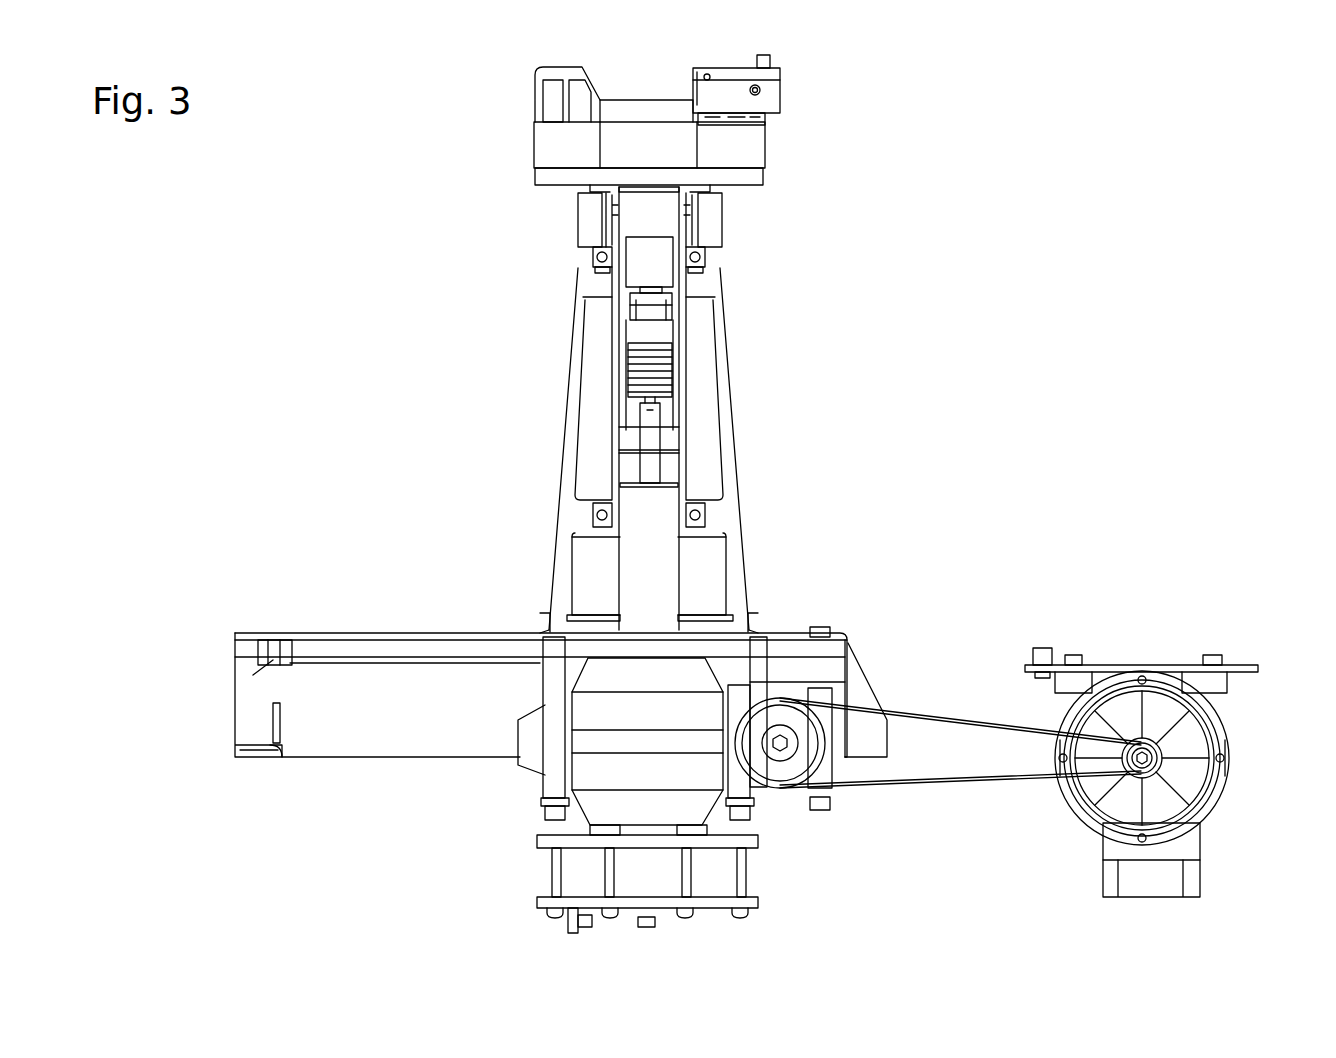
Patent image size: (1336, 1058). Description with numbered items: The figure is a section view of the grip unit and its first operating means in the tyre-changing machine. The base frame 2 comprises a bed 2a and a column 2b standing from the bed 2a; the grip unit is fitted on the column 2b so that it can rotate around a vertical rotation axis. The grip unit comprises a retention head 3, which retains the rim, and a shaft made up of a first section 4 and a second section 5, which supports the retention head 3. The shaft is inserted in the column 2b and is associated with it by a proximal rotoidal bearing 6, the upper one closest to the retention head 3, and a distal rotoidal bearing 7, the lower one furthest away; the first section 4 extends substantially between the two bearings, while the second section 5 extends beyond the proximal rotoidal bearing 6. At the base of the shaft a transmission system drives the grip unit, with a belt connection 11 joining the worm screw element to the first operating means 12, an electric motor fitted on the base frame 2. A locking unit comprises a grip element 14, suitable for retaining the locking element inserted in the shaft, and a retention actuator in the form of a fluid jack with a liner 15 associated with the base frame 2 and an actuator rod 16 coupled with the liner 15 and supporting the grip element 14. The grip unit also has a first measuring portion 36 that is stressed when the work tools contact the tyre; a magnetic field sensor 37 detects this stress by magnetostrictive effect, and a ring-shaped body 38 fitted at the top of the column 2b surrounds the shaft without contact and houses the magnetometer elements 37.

The base frame 2 is at (300, 622).
The bed 2a is at (262, 712).
The column 2b is at (723, 453).
The retention head 3 is at (556, 137).
The first section of the shaft 4 is at (683, 340).
The second section of the shaft 5 is at (692, 200).
The first measuring portion 36 is at (703, 220).
The proximal rotoidal bearing 6 is at (593, 253).
The distal rotoidal bearing 7 is at (587, 520).
The belt connection 11 is at (928, 712).
The first operating means 12 is at (1185, 738).
The grip element 14 is at (648, 258).
The liner 15 is at (578, 872).
The actuator rod 16 is at (650, 437).
The magnetic field sensor 37 is at (600, 213).
The ring-shaped body 38 is at (585, 203).